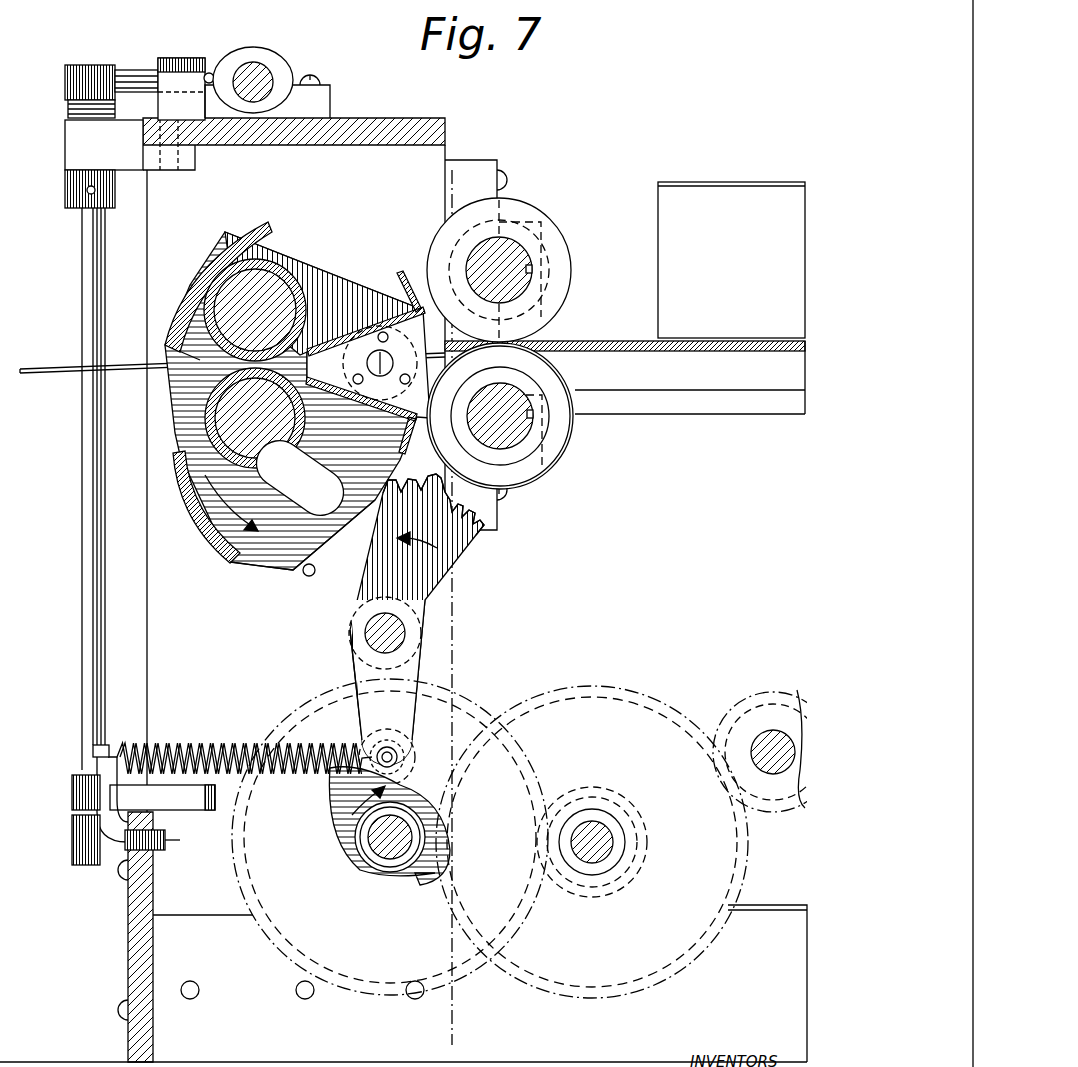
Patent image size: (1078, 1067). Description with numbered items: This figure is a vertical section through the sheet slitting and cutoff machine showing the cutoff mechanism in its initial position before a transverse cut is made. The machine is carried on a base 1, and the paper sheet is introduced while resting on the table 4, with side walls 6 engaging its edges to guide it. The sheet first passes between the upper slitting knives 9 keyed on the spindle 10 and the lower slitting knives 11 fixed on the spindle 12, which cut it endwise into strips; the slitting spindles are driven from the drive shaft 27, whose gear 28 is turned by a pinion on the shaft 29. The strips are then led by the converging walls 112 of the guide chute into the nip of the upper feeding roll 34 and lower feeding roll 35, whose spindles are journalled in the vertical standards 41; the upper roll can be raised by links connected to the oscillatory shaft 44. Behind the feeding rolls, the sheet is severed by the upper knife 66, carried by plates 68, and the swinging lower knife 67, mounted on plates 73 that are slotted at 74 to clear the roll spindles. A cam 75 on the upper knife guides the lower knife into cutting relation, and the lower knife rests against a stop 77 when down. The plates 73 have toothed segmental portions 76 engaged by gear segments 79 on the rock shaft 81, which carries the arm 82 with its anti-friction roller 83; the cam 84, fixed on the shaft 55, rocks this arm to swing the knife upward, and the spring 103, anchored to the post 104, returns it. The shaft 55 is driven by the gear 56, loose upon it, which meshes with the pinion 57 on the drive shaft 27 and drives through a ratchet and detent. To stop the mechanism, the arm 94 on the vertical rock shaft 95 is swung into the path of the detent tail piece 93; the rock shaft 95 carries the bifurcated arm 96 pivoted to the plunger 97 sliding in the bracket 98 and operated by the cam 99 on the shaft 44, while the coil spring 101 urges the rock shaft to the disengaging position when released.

The base 1 is at (800, 884).
The table 4 is at (712, 343).
The side walls 6 is at (731, 260).
The upper slitting knives 9 is at (515, 349).
The spindle 10 is at (525, 290).
The lower slitting knives 11 is at (516, 416).
The spindle 12 is at (525, 432).
The drive shaft 27 is at (600, 847).
The gear 28 is at (672, 712).
The shaft 29 is at (785, 740).
The upper feeding roll 34 is at (278, 270).
The lower feeding roll 35 is at (304, 412).
The vertical standards 41 is at (152, 218).
The oscillatory shaft 44 is at (275, 76).
The shaft 55 is at (392, 860).
The gear 56 is at (515, 928).
The pinion 57 is at (645, 825).
The upper knife 66 is at (262, 228).
The lower knife 67 is at (210, 528).
The plates 68 is at (338, 285).
The plates 73 is at (285, 555).
The slot 74 is at (288, 502).
The cam 75 is at (175, 375).
The toothed sector 76 is at (380, 469).
The stop 77 is at (310, 577).
The gear segments 79 is at (460, 548).
The rock shaft 81 is at (370, 637).
The arm 82 is at (415, 685).
The anti-friction roller 83 is at (405, 755).
The cam 84 is at (335, 808).
The tail piece 93 is at (225, 815).
The arm 94 is at (192, 805).
The vertical rock shaft 95 is at (88, 232).
The bifurcated arm 96 is at (92, 66).
The plunger 97 is at (135, 72).
The bracket 98 is at (184, 60).
The cam 99 is at (265, 55).
The coil spring 101 is at (68, 104).
The spring 103 is at (170, 745).
The post 104 is at (95, 755).
The converging walls 112 is at (392, 438).